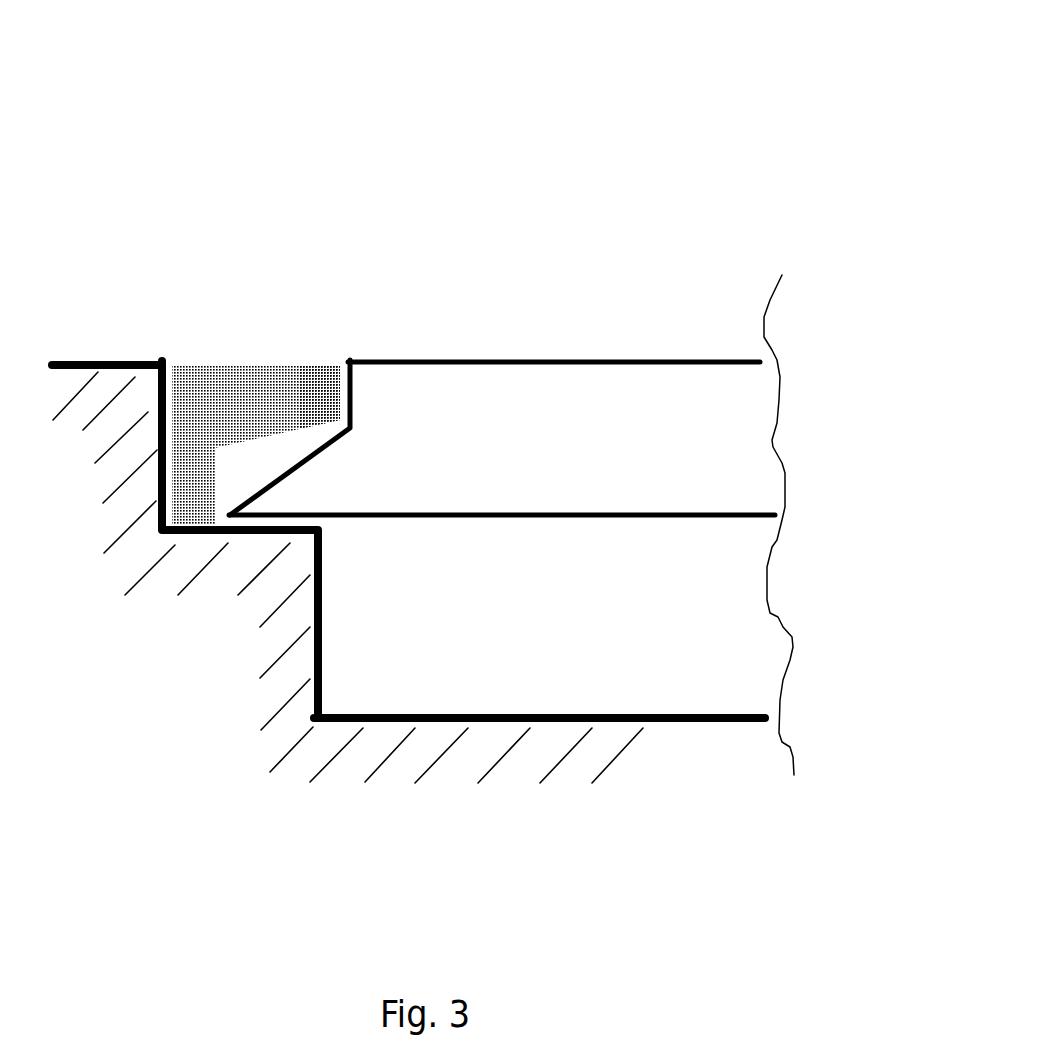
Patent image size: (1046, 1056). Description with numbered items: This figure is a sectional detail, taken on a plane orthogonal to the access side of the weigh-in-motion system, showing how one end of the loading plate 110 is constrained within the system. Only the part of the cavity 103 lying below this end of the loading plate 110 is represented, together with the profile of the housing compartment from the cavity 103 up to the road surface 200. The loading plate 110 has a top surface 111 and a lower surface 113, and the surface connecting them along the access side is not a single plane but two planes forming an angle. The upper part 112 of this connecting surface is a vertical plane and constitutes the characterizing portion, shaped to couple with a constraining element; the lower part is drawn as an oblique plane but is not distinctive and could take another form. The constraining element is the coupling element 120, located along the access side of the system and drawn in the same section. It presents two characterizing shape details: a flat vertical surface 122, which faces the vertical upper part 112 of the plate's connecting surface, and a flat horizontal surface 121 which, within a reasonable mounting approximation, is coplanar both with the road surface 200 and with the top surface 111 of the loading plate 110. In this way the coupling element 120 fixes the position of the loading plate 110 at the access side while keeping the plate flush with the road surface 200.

The loading plate 110 is at (561, 396).
The top surface 111 is at (535, 360).
The upper part of the connecting surface 112 is at (350, 418).
The lower surface 113 is at (645, 515).
The coupling element 120 is at (408, 550).
The flat horizontal surface 121 is at (270, 322).
The flat vertical surface 122 is at (333, 390).
The road surface 200 is at (83, 362).
The cavity 103 is at (487, 622).